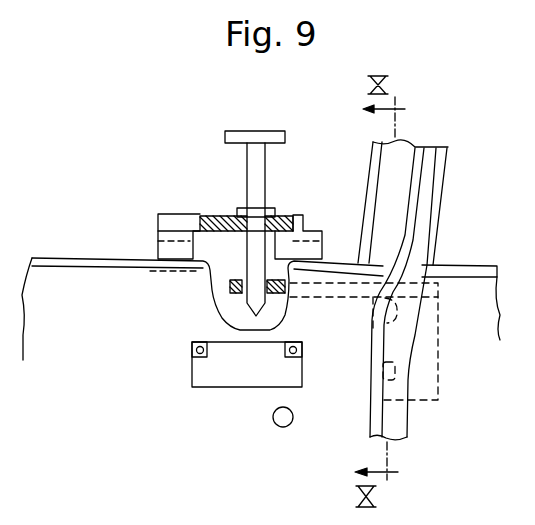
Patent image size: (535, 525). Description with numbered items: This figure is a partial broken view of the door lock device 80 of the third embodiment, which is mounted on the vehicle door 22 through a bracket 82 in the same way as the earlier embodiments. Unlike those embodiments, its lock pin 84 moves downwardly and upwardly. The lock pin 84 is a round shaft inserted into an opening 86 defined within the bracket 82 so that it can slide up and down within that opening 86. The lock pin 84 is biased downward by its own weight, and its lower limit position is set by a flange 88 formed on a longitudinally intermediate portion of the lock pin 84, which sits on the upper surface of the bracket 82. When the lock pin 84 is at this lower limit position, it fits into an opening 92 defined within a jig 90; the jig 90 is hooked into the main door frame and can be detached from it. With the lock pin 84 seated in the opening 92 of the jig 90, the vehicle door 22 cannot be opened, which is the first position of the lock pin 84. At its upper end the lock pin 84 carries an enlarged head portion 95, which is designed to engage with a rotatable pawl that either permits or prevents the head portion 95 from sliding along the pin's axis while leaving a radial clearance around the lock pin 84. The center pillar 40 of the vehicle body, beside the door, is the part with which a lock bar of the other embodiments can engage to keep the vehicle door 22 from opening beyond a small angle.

The vehicle door 22 is at (65, 282).
The center pillar 40 is at (432, 155).
The door lock device 80 is at (179, 192).
The bracket 82 is at (173, 223).
The lock pin 84 is at (253, 173).
The opening 86 is at (262, 204).
The flange 88 is at (238, 207).
The jig 90 is at (428, 387).
The opening 92 is at (243, 297).
The head portion 95 is at (272, 131).